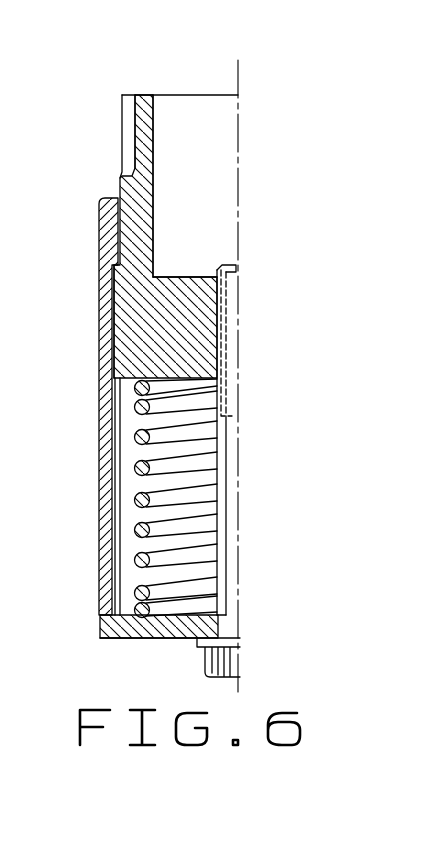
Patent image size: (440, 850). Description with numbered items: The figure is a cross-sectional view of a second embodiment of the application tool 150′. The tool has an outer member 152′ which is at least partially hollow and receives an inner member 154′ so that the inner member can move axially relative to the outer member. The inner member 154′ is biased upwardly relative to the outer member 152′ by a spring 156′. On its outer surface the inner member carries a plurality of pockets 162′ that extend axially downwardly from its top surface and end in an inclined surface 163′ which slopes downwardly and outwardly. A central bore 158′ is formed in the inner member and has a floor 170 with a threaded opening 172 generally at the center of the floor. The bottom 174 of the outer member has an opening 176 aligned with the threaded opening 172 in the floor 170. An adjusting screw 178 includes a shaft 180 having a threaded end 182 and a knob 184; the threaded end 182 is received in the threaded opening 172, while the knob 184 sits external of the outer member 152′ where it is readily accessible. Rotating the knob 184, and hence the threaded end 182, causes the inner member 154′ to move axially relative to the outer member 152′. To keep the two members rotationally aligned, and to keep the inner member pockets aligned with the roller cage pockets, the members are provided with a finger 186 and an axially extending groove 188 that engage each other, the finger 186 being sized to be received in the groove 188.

The application tool 150′ is at (258, 247).
The outer member 152′ is at (95, 315).
The inner member 154′ is at (206, 92).
The spring 156′ is at (183, 470).
The central bore 158′ is at (219, 118).
The pockets 162′ is at (128, 135).
The inclined surface 163′ is at (120, 164).
The floor 170 is at (169, 277).
The threaded opening 172 is at (226, 300).
The bottom 174 is at (120, 641).
The opening 176 is at (223, 625).
The adjusting screw 178 is at (247, 577).
The shaft 180 is at (237, 453).
The threaded end 182 is at (228, 341).
The knob 184 is at (237, 657).
The finger 186 is at (115, 334).
The groove 188 is at (130, 465).